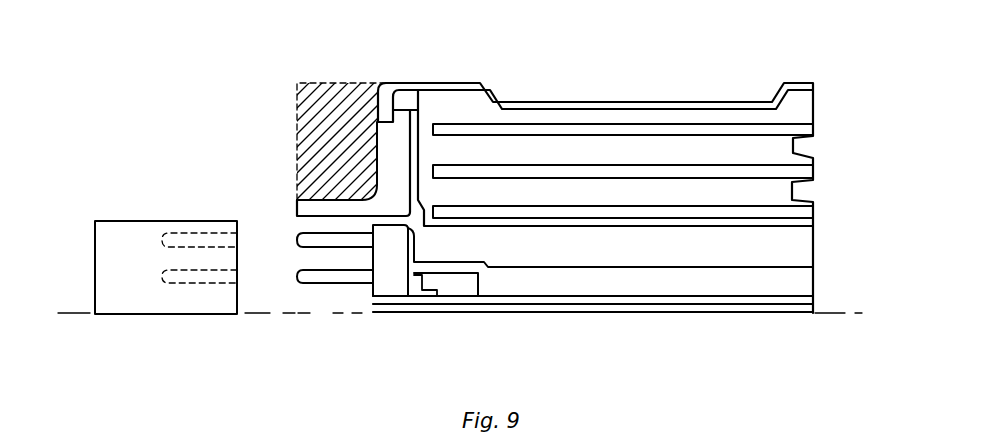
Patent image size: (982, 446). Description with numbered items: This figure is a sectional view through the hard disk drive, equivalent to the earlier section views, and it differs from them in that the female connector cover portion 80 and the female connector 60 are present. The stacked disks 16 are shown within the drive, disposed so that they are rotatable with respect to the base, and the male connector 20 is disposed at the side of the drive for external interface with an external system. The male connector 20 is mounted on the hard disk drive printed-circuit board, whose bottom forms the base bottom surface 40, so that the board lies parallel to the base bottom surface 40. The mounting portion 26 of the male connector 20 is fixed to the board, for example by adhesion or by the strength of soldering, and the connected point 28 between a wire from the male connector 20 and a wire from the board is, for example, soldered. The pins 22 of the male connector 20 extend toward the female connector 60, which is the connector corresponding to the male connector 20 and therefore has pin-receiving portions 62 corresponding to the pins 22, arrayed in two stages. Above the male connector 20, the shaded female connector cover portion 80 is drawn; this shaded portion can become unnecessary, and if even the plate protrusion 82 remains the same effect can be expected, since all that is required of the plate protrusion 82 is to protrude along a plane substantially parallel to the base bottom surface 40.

The stacked disks 16 is at (812, 190).
The male connector 20 is at (278, 280).
The pins 22 is at (323, 285).
The mounting portion 26 is at (393, 298).
The connected point 28 is at (428, 296).
The base bottom surface 40 is at (459, 315).
The female connector 60 is at (173, 215).
The pin-receiving portions 62 is at (183, 281).
The female connector cover portion 80 is at (388, 59).
The plate protrusion 82 is at (327, 208).